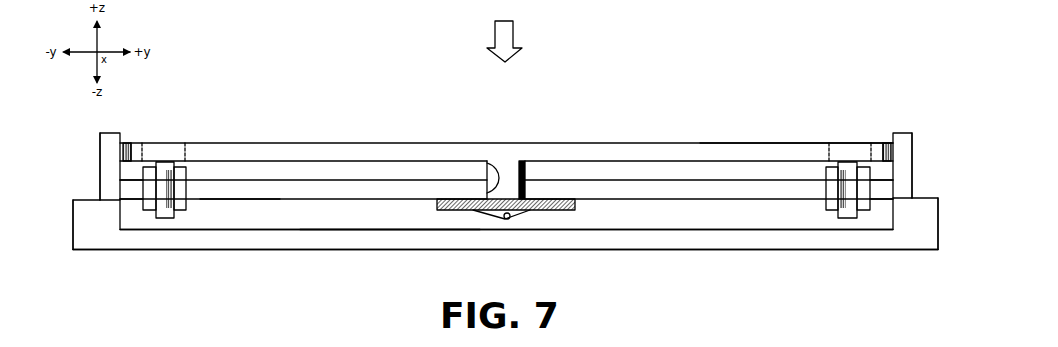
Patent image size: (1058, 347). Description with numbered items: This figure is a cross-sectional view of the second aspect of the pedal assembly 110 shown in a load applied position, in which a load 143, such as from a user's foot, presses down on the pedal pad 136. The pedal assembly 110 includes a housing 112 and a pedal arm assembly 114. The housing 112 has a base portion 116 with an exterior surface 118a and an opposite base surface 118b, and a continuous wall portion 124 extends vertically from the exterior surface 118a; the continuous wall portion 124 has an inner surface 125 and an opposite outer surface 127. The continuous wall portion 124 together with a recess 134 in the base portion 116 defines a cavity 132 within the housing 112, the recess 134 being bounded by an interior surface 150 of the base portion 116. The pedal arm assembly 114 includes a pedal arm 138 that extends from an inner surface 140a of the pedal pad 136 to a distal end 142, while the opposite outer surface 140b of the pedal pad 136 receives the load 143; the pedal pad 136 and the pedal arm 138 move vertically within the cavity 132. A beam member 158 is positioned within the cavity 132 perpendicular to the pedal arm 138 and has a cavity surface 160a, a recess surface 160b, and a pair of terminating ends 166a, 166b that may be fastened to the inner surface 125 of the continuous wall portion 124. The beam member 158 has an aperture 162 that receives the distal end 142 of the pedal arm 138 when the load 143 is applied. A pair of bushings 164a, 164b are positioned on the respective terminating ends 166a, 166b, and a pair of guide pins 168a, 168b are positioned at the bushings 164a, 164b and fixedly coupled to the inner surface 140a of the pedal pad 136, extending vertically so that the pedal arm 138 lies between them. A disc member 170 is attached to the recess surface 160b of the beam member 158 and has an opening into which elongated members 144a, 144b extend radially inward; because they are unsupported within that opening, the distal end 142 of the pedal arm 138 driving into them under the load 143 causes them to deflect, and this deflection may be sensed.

The pedal assembly 110 is at (779, 55).
The housing 112 is at (272, 88).
The pedal arm assembly 114 is at (649, 95).
The base portion 116 is at (68, 238).
The exterior surface 118a is at (88, 198).
The base surface 118b is at (258, 250).
The continuous wall portion 124 is at (109, 133).
The inner surface 125 is at (133, 160).
The outer surface 127 is at (99, 144).
The cavity 132 is at (128, 162).
The recess 134 is at (392, 214).
The pedal pad 136 is at (765, 143).
The pedal arm 138 is at (499, 165).
The inner surface 140a is at (307, 143).
The outer surface 140b is at (380, 143).
The distal end 142 is at (520, 161).
The load 143 is at (514, 41).
The elongated member 144a is at (467, 211).
The elongated member 144b is at (530, 212).
The interior surface 150 is at (313, 229).
The beam member 158 is at (236, 215).
The cavity surface 160a is at (723, 180).
The recess surface 160b is at (741, 200).
The aperture 162 is at (487, 163).
The bushing 164a is at (149, 211).
The bushing 164b is at (862, 211).
The terminating end 166a is at (118, 190).
The terminating end 166b is at (913, 193).
The guide pin 168a is at (176, 181).
The guide pin 168b is at (846, 162).
The disc member 170 is at (578, 220).